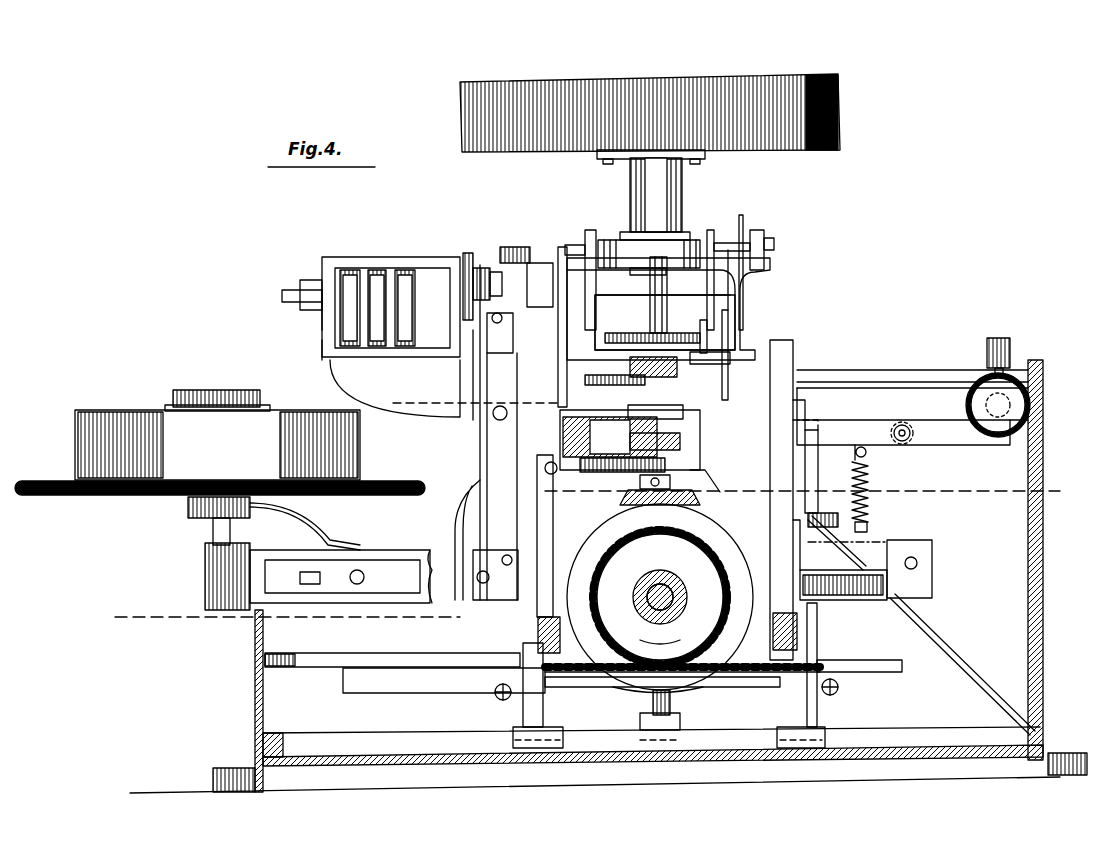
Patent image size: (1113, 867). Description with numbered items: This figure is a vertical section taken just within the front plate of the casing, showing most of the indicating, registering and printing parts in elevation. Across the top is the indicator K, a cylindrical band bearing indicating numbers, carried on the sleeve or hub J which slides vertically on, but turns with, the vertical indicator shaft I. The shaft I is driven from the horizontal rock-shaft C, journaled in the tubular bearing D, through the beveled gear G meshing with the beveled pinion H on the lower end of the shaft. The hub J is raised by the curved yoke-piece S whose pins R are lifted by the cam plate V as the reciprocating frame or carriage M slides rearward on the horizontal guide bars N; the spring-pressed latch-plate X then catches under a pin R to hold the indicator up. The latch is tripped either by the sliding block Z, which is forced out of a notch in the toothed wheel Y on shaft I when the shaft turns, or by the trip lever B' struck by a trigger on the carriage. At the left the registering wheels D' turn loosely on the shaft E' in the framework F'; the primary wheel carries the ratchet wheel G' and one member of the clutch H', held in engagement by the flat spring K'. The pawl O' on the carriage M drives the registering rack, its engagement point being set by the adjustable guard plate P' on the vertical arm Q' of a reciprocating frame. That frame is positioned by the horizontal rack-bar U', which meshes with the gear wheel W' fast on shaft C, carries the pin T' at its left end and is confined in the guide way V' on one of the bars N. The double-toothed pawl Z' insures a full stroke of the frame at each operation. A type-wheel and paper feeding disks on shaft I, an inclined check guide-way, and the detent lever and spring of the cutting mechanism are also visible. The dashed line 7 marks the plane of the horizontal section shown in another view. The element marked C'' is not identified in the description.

The indicator K is at (665, 113).
The sleeve or hub J is at (672, 190).
The curved yoke-piece S is at (680, 238).
The pins R is at (580, 275).
The reciprocating frame or carriage M is at (553, 353).
The spring-pressed latch-plate X is at (741, 215).
The cam plate V is at (748, 237).
The registering wheels D' is at (391, 324).
The shaft E' is at (291, 292).
The framework F' is at (313, 353).
The ratchet wheel G' is at (454, 273).
The clutch H' is at (475, 263).
The flat spring K' is at (492, 261).
The pin T' is at (444, 460).
The pawl O' is at (527, 277).
The adjustable guard plate P' is at (498, 333).
The vertical arm Q' is at (459, 538).
The section line 7 is at (590, 553).
The toothed wheel Y is at (620, 333).
The vertical indicator shaft I is at (667, 310).
The sliding block Z is at (704, 351).
The trip lever B' is at (668, 368).
The plate C'' is at (728, 367).
The beveled pinion H is at (671, 493).
The beveled gear G is at (660, 597).
The horizontal rock-shaft C is at (670, 597).
The tubular bearing D is at (660, 579).
The gear wheel W' is at (660, 642).
The horizontal rack-bar U' is at (682, 698).
The horizontal guide bars N is at (543, 705).
The guide way V' is at (380, 701).
The double-toothed pawl Z' is at (843, 588).